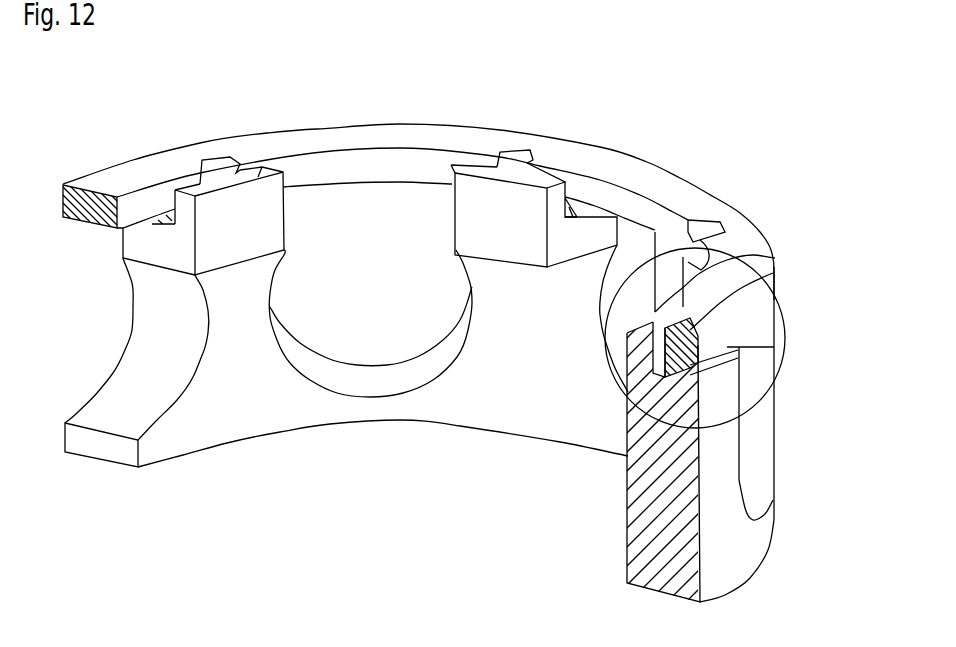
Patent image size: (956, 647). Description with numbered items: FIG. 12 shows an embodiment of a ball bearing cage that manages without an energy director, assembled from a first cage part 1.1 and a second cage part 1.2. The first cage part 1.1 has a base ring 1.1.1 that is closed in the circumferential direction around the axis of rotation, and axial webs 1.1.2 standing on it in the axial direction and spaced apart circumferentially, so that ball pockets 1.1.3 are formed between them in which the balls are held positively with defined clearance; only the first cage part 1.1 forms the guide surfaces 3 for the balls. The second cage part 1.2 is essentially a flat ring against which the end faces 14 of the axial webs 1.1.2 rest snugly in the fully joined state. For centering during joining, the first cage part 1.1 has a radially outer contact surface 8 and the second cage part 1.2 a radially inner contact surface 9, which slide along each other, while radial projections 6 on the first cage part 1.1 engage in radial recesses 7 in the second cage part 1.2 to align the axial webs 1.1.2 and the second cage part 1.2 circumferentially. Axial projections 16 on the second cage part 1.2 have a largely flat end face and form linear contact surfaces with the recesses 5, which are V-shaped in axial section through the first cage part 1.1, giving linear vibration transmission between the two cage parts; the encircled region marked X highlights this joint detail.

The first cage part 1.1 is at (230, 422).
The base ring 1.1.1 is at (318, 405).
The axial webs 1.1.2 is at (717, 493).
The ball pockets 1.1.3 is at (370, 375).
The second cage part 1.2 is at (103, 180).
The guide surfaces 3 is at (310, 368).
The recesses 5 is at (628, 434).
The radial projections 6 is at (197, 193).
The radial recesses 7 is at (236, 165).
The radially outer contact surface 8 is at (577, 187).
The radially inner contact surface 9 is at (258, 177).
The end faces 14 is at (727, 347).
The axial projections 16 is at (625, 348).
The detail circle X is at (709, 338).